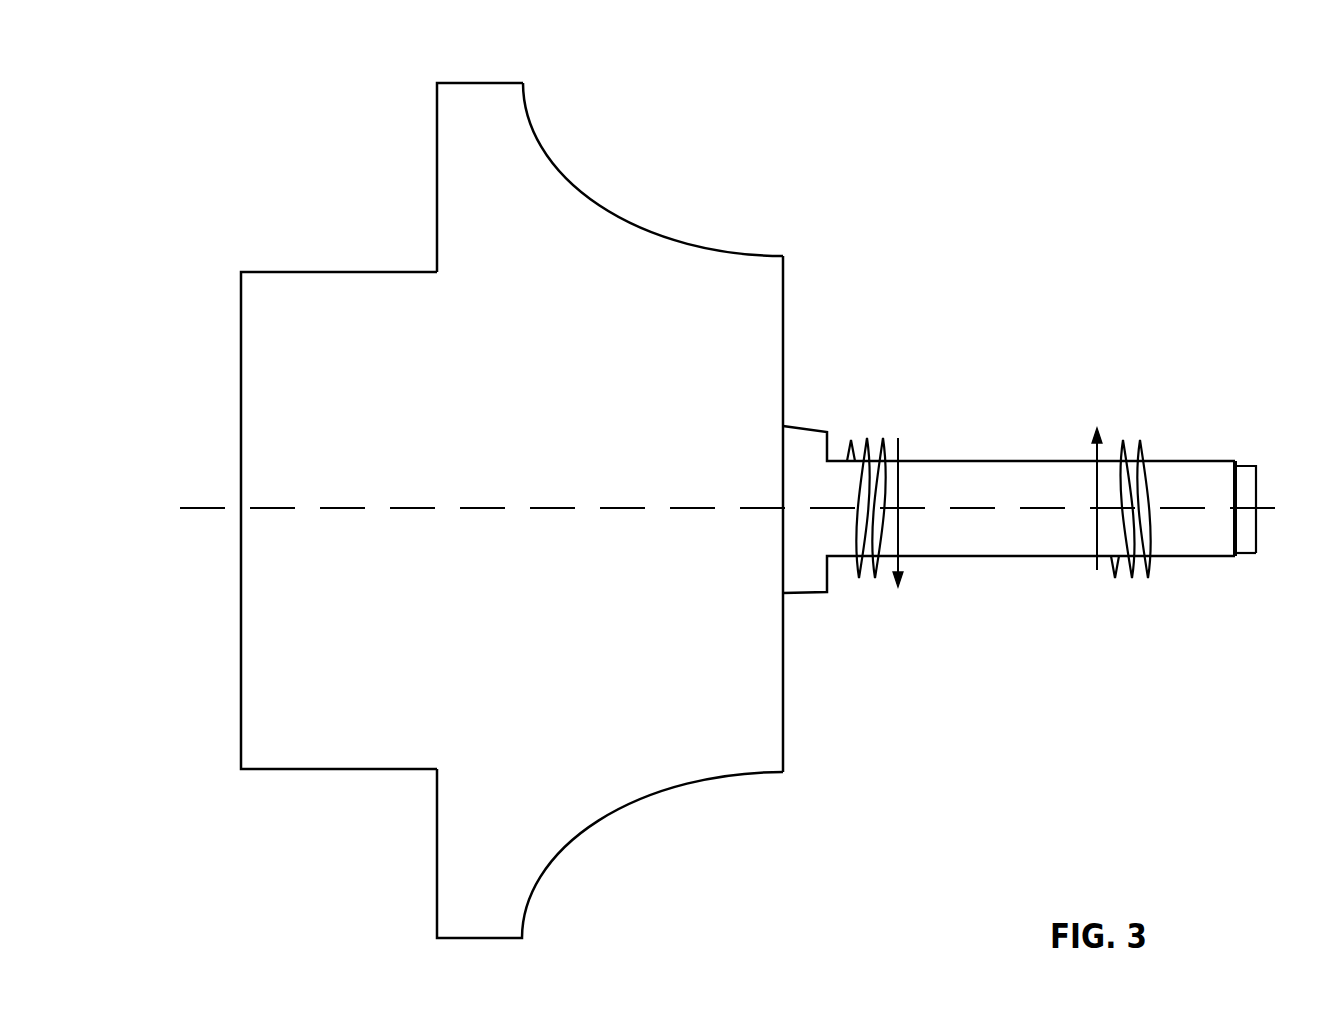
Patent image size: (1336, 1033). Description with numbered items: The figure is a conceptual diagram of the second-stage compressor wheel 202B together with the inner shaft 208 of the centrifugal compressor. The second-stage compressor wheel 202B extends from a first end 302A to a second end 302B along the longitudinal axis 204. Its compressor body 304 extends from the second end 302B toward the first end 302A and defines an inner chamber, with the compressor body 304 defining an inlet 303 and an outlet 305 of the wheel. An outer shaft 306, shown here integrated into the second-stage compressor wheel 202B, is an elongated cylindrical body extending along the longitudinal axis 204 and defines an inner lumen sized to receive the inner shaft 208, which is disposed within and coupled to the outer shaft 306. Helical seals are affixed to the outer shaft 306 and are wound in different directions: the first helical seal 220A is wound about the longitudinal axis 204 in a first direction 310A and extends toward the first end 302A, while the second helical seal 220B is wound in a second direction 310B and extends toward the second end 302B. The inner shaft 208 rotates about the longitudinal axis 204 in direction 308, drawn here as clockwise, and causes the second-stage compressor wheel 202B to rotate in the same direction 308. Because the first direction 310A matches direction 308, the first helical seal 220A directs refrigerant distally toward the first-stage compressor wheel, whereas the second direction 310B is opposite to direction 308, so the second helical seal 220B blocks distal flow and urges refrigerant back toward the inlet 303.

The second-stage compressor wheel 202B is at (248, 110).
The outlet 305 is at (503, 71).
The compressor body 304 is at (703, 290).
The inlet 303 is at (795, 308).
The second end 302B is at (241, 250).
The direction 308 is at (191, 553).
The outer shaft 306 is at (992, 485).
The second helical seal 220B is at (870, 415).
The first helical seal 220A is at (1135, 410).
The second direction 310B is at (898, 532).
The first direction 310A is at (1095, 547).
The first end 302A is at (1236, 435).
The longitudinal axis 204 is at (1257, 505).
The inner shaft 208 is at (1243, 553).